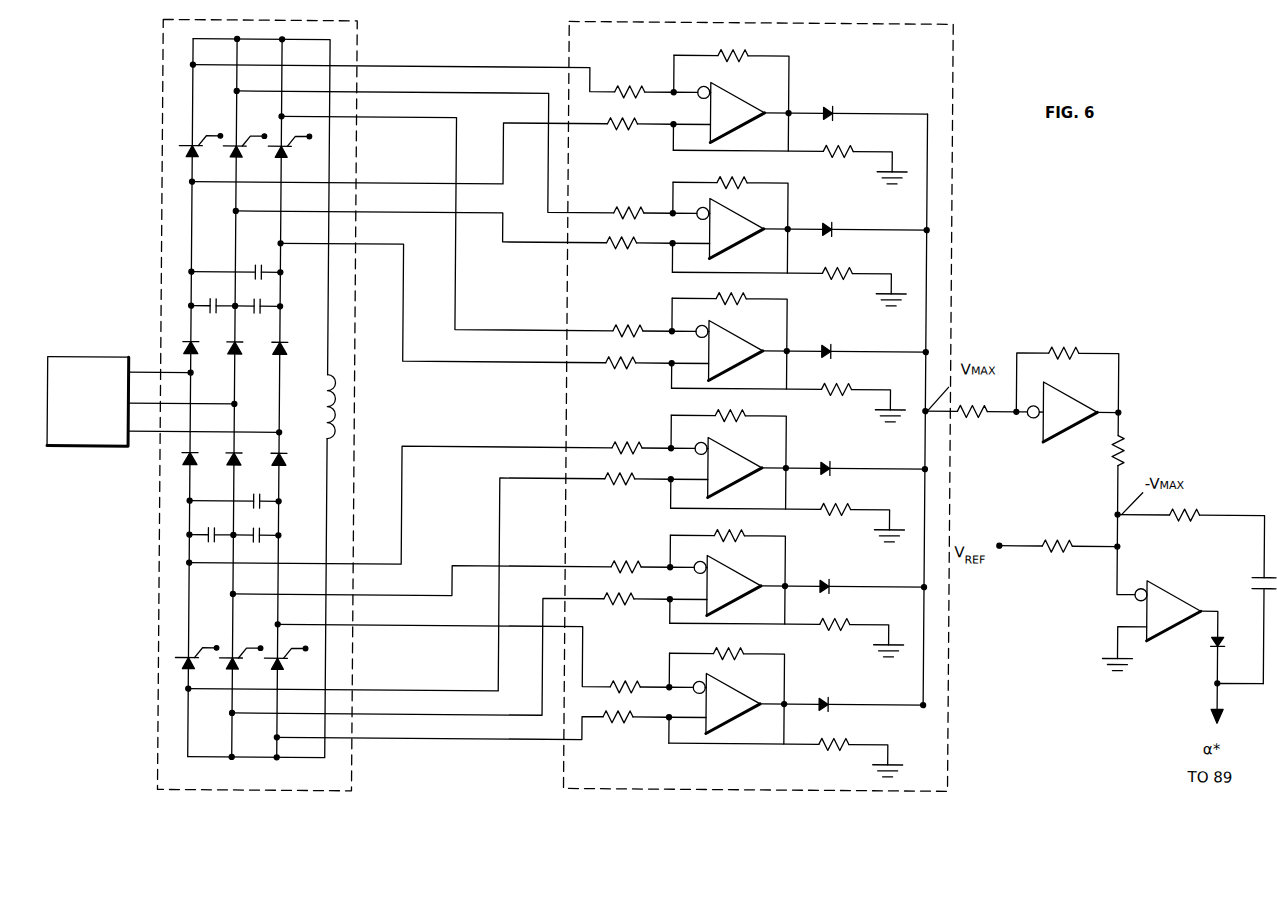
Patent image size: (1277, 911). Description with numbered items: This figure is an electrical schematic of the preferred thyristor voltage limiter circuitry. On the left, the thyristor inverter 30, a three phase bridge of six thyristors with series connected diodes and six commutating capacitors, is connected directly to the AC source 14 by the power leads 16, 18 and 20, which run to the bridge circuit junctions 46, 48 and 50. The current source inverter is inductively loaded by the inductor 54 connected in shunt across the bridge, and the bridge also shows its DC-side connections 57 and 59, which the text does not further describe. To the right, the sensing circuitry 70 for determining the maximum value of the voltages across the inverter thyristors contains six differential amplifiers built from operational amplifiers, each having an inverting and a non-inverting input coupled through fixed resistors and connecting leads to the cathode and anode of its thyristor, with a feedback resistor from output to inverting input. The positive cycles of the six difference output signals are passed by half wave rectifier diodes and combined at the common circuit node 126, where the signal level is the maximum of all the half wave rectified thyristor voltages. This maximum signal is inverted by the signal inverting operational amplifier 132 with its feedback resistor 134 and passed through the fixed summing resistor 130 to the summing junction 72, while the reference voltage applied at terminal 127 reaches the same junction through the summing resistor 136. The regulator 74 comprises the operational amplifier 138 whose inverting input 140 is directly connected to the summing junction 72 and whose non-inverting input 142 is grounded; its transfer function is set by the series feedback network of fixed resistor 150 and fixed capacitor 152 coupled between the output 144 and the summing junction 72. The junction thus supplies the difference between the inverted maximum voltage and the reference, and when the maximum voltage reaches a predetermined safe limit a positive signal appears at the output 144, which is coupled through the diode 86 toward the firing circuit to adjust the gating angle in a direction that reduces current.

The AC source 14 is at (95, 353).
The AC power line 16 is at (148, 365).
The AC power line 18 is at (148, 403).
The AC power line 20 is at (135, 445).
The inverter 30 is at (358, 50).
The bridge circuit junction 46 is at (211, 378).
The bridge circuit junction 48 is at (240, 404).
The bridge circuit junction 50 is at (288, 433).
The inductor 54 is at (324, 394).
The positive DC bus 57 is at (292, 44).
The negative DC bus 59 is at (272, 753).
The maximum voltage sensing circuitry 70 is at (953, 195).
The summing junction 72 is at (1111, 554).
The regulator 74 is at (1173, 712).
The diode 86 is at (1230, 640).
The common circuit node 126 is at (928, 455).
The reference voltage terminal 127 is at (996, 538).
The fixed summing resistor 130 is at (1132, 448).
The signal inverting operational amplifier 132 is at (1068, 430).
The feedback resistor 134 is at (1072, 347).
The summing resistor 136 is at (1054, 540).
The operational amplifier 138 is at (1168, 630).
The inverting input 140 is at (1142, 586).
The non-inverting input 142 is at (1133, 622).
The output 144 is at (1222, 600).
The fixed resistor 150 is at (1192, 518).
The fixed capacitor 152 is at (1246, 572).